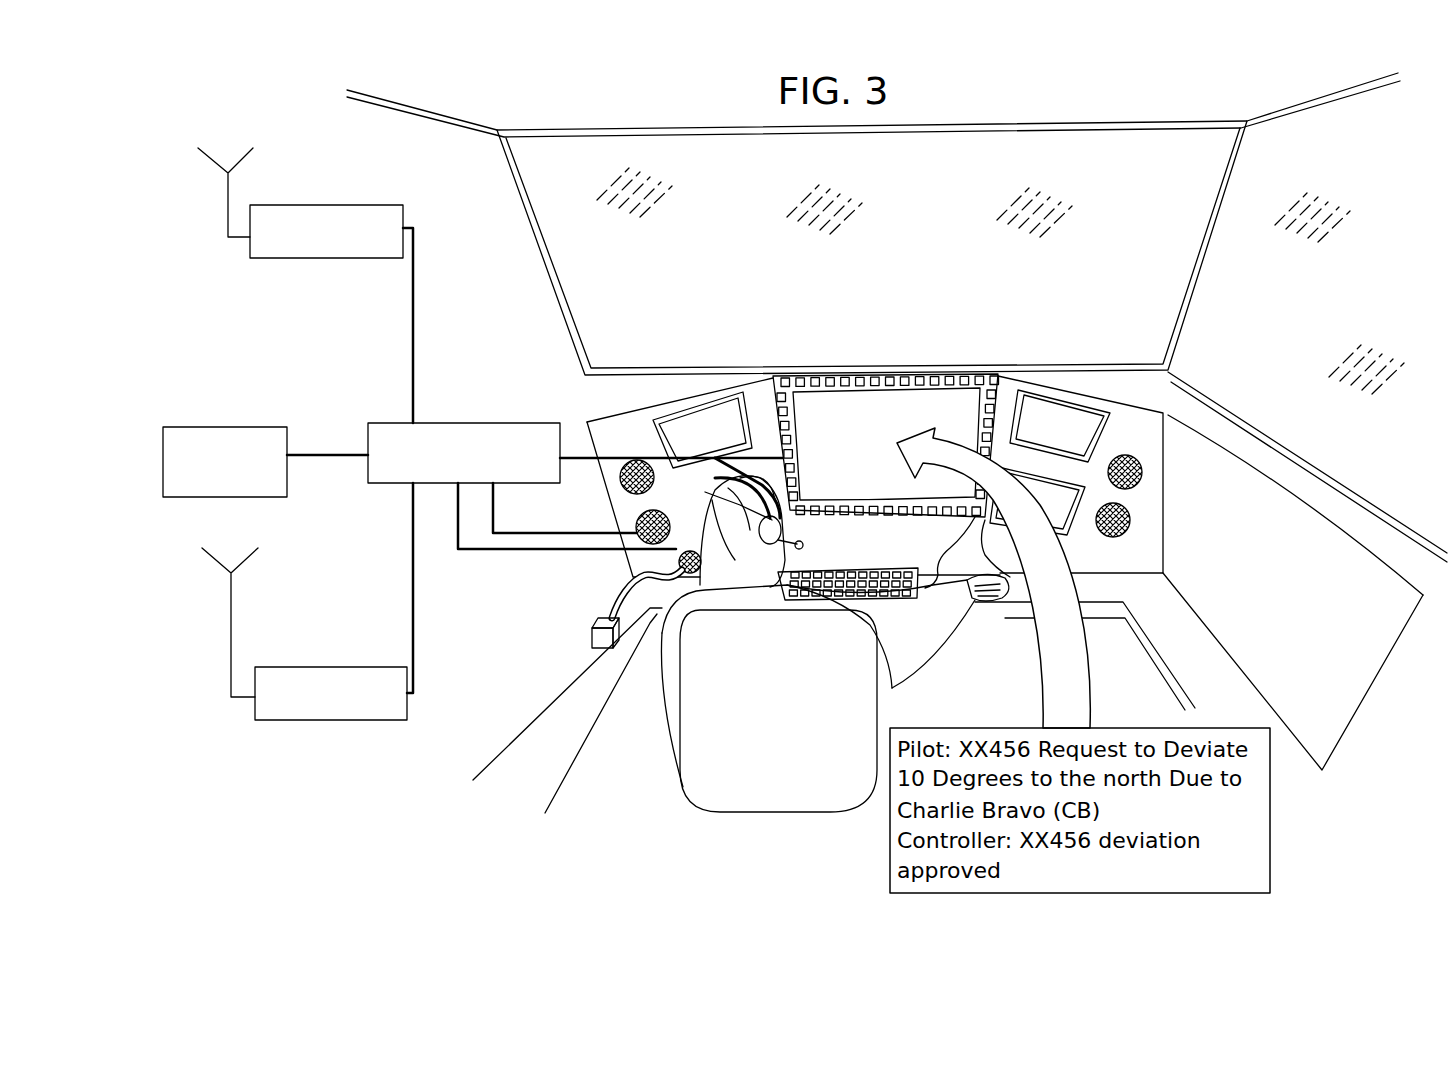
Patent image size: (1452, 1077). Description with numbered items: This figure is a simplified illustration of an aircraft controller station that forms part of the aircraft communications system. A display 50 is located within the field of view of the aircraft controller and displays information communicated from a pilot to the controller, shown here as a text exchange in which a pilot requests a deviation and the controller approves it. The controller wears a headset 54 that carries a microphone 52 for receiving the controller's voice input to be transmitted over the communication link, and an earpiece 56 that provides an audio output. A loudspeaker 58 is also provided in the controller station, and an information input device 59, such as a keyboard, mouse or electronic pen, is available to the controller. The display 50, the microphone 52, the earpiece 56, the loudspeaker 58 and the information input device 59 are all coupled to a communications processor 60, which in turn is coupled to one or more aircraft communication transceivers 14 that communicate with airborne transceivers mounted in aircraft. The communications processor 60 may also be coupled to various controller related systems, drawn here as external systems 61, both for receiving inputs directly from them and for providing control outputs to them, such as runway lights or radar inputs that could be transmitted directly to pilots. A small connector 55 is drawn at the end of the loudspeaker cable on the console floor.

The aircraft communication transceiver 14 is at (268, 210).
The external systems 61 is at (197, 427).
The communications processor 60 is at (515, 423).
The display 50 is at (893, 400).
The controller's headset 54 is at (714, 458).
The earpiece 56 is at (783, 529).
The microphone 52 is at (803, 546).
The loudspeaker 58 is at (637, 535).
The microphone jack 55 is at (592, 630).
The information input device 59 is at (917, 600).